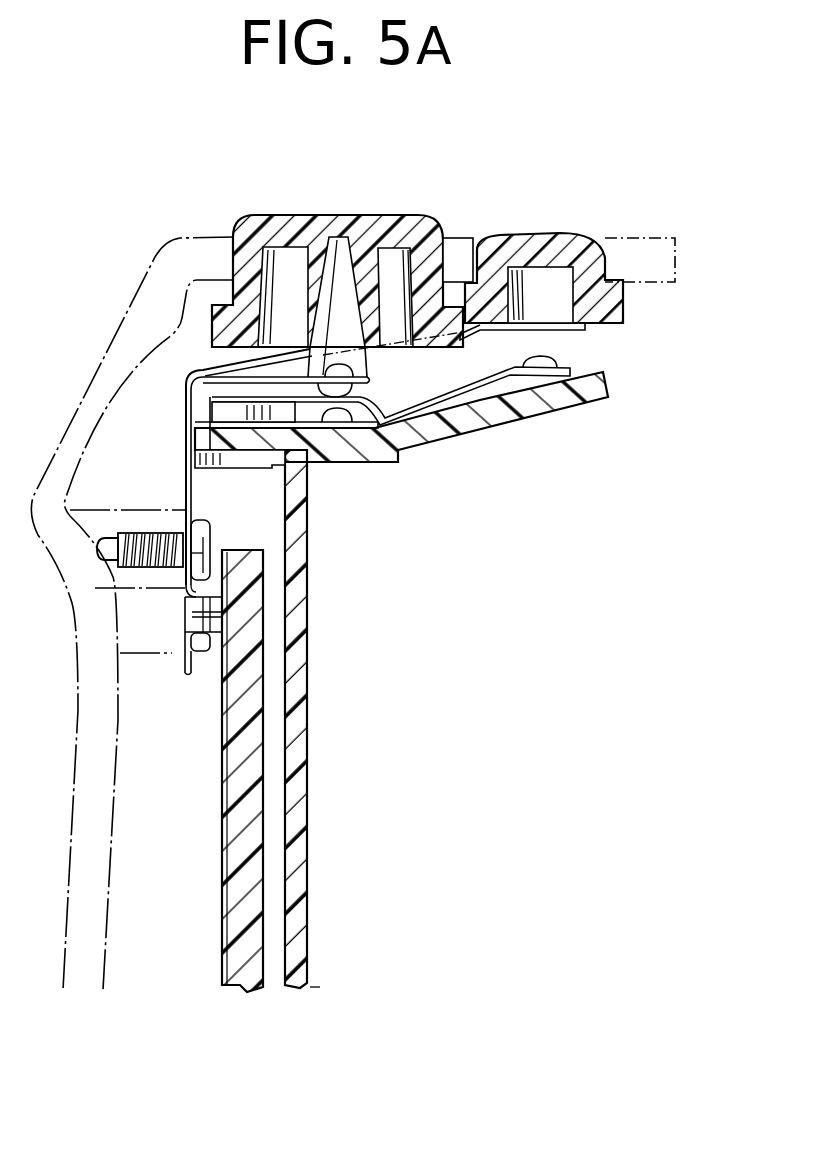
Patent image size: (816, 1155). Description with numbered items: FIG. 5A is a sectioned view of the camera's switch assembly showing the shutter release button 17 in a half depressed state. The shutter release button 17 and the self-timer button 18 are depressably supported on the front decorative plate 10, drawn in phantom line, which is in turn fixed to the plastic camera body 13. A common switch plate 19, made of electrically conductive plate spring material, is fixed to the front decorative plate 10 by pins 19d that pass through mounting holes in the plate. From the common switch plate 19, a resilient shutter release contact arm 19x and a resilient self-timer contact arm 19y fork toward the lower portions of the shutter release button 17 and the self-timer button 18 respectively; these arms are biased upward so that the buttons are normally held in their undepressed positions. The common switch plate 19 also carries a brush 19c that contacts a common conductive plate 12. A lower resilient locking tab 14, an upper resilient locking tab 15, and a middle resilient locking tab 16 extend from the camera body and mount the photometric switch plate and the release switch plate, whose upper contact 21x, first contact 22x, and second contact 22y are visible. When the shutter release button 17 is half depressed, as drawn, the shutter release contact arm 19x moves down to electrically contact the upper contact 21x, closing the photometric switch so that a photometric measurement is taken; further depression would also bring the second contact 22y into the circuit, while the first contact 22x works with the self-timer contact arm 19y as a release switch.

The front decorative plate 10 is at (70, 827).
The common conductive plate 12 is at (222, 800).
The plastic camera body 13 is at (302, 858).
The lower resilient locking tab 14 is at (213, 472).
The upper resilient locking tab 15 is at (222, 410).
The middle resilient locking tab 16 is at (197, 437).
The shutter release button 17 is at (385, 225).
The self-timer button 18 is at (567, 240).
The common switch plate 19 is at (192, 423).
The brush 19c is at (184, 603).
The pins 19d is at (197, 560).
The shutter release contact arm 19x is at (347, 377).
The self-timer contact arm 19y is at (563, 333).
The upper contact 21x is at (396, 420).
The first contact 22x is at (537, 366).
The second contact 22y is at (333, 422).